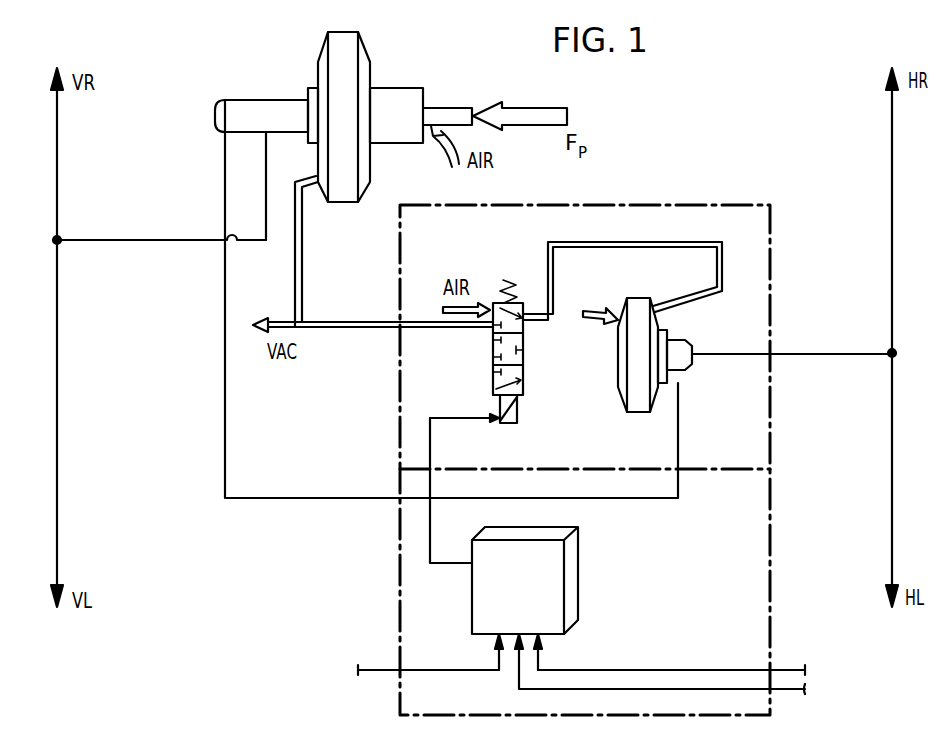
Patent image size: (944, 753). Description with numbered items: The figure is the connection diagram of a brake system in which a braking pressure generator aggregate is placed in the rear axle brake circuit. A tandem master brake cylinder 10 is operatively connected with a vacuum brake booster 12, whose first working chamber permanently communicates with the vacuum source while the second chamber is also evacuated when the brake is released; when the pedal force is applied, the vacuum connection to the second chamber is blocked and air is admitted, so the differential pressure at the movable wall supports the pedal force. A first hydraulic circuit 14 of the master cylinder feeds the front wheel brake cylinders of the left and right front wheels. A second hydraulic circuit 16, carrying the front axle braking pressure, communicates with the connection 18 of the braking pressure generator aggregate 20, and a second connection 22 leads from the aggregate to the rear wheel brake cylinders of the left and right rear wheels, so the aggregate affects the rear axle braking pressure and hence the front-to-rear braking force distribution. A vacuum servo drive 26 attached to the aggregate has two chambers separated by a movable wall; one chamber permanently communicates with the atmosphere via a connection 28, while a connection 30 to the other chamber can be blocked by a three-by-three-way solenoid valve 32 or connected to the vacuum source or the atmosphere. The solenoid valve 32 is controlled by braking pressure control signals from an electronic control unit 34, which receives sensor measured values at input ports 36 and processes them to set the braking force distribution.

The tandem master brake cylinder 10 is at (257, 108).
The vacuum brake booster 12 is at (347, 58).
The first hydraulic circuit 14 is at (147, 213).
The second hydraulic circuit 16 is at (225, 328).
The connection 18 is at (666, 398).
The braking pressure generator aggregate 20 is at (691, 342).
The second connection 22 is at (717, 356).
The vacuum servo drive 26 is at (647, 403).
The connection 28 is at (607, 312).
The connection 30 is at (694, 275).
The 3/3-way solenoid valve 32 is at (524, 395).
The electronic control unit 34 is at (573, 572).
The input ports 36 is at (538, 628).